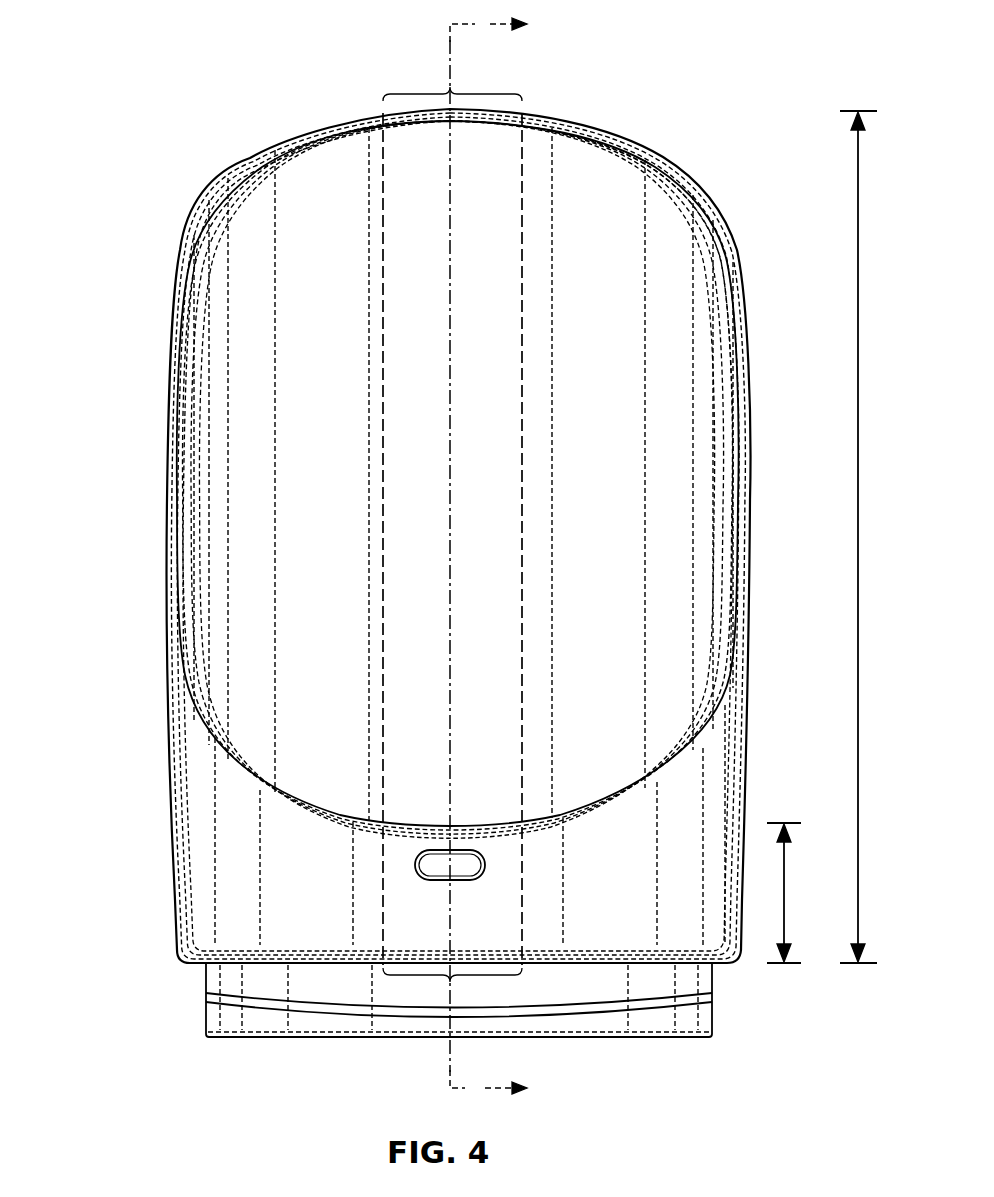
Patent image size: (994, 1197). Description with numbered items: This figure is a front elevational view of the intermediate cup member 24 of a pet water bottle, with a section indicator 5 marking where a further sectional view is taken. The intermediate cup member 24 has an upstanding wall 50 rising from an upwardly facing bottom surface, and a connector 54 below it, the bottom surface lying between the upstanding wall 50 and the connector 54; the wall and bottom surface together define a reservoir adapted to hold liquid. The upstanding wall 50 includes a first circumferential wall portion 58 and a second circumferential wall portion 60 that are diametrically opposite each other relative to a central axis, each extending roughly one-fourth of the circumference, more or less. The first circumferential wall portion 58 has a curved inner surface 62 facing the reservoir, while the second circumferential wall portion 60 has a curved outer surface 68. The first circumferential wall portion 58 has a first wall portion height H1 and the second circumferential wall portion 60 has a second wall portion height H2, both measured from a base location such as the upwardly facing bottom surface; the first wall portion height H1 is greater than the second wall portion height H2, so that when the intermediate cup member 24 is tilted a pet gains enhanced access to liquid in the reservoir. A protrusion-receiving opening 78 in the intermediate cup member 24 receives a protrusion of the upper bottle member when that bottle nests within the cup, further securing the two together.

The intermediate cup member 24 is at (634, 38).
The upstanding wall 50 is at (675, 800).
The connector 54 is at (700, 997).
The first circumferential wall portion 58 is at (452, 513).
The second circumferential wall portion 60 is at (452, 987).
The inner surface 62 is at (425, 338).
The outer surface 68 is at (398, 858).
The protrusion-receiving opening 78 is at (413, 863).
The section line for FIG. 5 is at (498, 557).
The first wall portion height H1 is at (866, 537).
The second wall portion height H2 is at (789, 893).